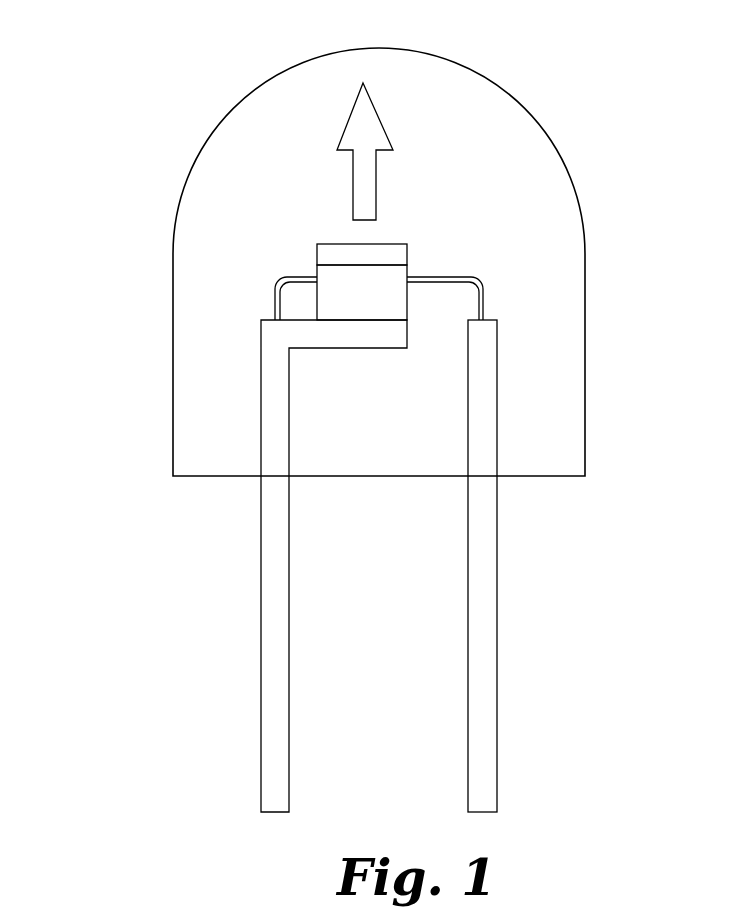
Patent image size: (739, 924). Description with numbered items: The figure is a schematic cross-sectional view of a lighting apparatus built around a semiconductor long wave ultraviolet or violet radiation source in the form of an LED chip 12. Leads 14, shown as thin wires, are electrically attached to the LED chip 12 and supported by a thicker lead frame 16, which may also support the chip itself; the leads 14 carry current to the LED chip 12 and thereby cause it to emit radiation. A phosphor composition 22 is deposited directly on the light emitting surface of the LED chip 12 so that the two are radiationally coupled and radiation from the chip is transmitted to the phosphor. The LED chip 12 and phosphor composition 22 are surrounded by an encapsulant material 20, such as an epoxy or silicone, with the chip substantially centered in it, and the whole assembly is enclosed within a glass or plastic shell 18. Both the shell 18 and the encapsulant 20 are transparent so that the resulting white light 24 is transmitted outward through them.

The LED chip 12 is at (398, 292).
The leads 14 is at (275, 306).
The lead frame 16 is at (268, 650).
The shell 18 is at (567, 170).
The encapsulant material 20 is at (187, 110).
The phosphor composition 22 is at (375, 250).
The white light 24 is at (352, 182).